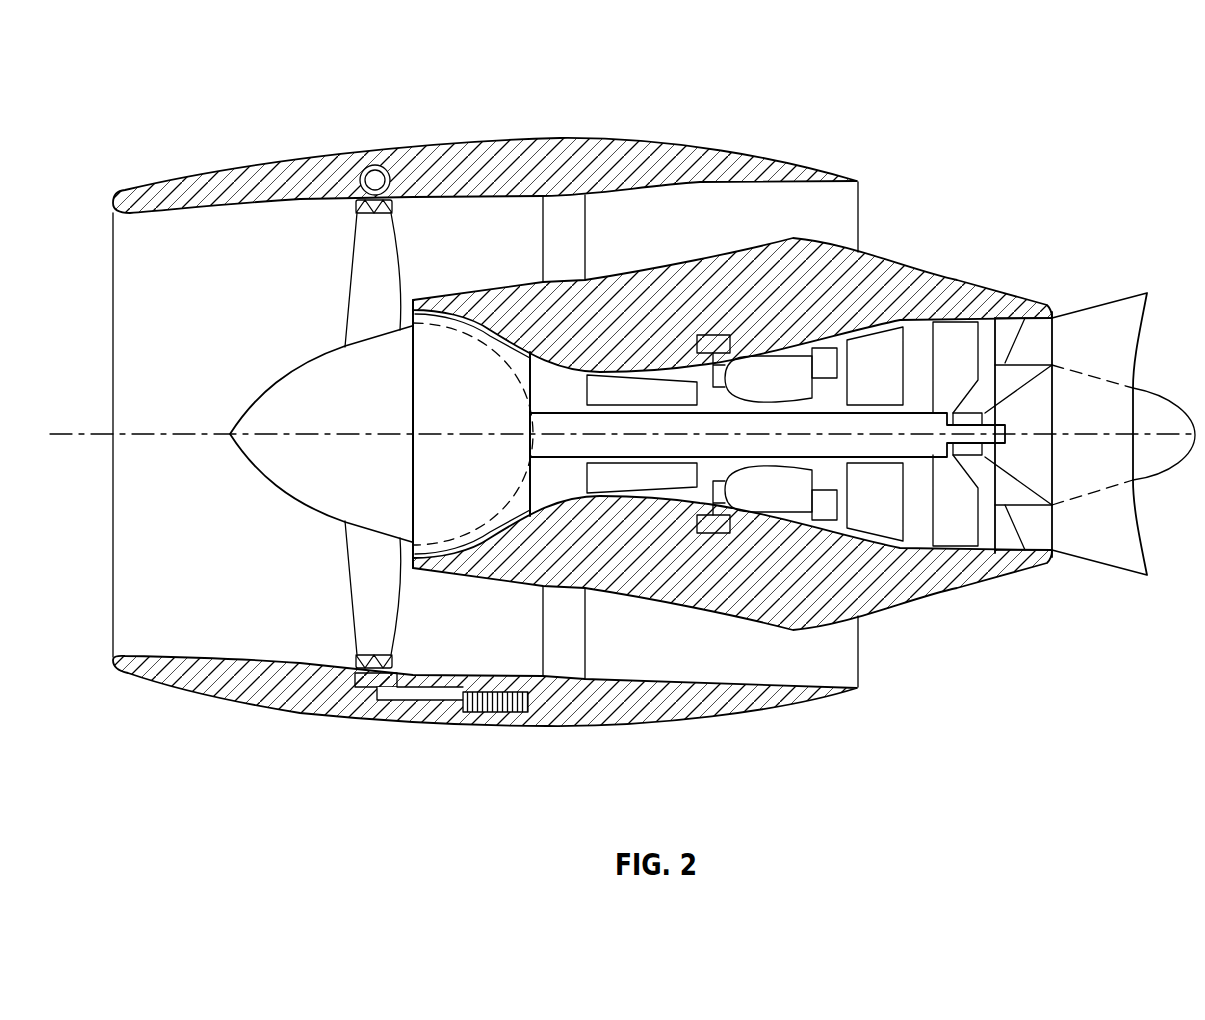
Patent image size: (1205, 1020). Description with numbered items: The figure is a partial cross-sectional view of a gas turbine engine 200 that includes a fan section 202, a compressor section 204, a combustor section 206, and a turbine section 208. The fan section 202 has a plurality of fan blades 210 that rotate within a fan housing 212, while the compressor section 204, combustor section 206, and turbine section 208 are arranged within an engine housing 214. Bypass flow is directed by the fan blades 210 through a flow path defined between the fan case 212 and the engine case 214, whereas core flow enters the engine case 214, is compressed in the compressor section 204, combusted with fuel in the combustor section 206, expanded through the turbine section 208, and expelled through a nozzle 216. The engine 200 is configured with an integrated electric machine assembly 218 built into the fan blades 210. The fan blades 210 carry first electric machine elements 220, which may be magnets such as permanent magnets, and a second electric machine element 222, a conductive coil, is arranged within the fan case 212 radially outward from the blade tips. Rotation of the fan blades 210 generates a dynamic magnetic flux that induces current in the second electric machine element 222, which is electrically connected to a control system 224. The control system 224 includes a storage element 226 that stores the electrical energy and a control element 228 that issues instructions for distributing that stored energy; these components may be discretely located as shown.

The gas turbine engine 200 is at (622, 428).
The fan section 202 is at (228, 375).
The compressor section 204 is at (622, 380).
The combustor section 206 is at (782, 364).
The turbine section 208 is at (953, 342).
The fan blades 210 is at (357, 293).
The fan housing 212 is at (485, 398).
The engine housing 214 is at (900, 582).
The nozzle 216 is at (1106, 323).
The integrated electric machine assembly 218 is at (323, 168).
The first electric machine elements 220 is at (374, 214).
The second electric machine element 222 is at (372, 164).
The control system 224 is at (410, 716).
The storage element 226 is at (362, 688).
The control element 228 is at (497, 713).